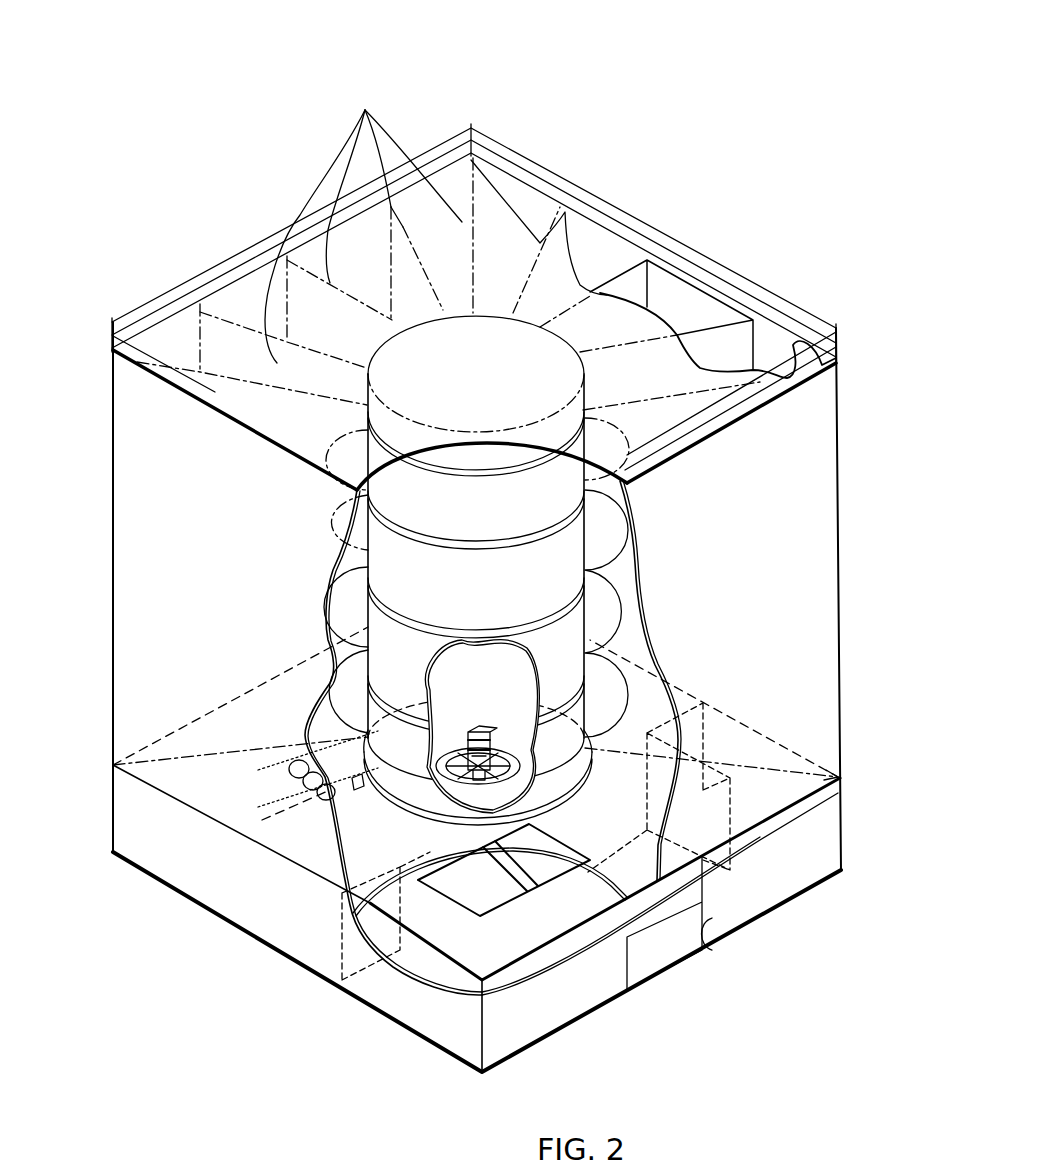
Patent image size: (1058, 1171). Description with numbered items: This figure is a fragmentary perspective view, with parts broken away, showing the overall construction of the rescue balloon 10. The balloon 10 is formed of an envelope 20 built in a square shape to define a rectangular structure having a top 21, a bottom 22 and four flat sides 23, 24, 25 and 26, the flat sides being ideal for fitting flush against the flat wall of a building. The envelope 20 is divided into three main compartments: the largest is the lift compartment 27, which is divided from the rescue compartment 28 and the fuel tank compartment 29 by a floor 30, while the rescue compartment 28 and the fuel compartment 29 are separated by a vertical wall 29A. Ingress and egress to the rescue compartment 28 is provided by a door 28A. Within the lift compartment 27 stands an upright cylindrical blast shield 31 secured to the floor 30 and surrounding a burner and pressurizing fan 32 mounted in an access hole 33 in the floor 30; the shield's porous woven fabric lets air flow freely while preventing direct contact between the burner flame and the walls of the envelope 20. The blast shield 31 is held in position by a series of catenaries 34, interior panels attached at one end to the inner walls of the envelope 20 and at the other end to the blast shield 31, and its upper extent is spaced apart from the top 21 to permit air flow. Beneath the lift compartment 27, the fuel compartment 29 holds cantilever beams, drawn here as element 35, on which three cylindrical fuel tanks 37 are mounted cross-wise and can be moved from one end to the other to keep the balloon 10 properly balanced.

The balloon 10 is at (500, 128).
The envelope 20 is at (826, 472).
The top 21 is at (246, 287).
The bottom 22 is at (797, 900).
The side 23 is at (733, 277).
The side 24 is at (176, 292).
The side 25 is at (130, 562).
The side 26 is at (805, 723).
The lift compartment 27 is at (593, 252).
The rescue compartment 28 is at (648, 942).
The door 28A is at (705, 953).
The fuel tank compartment 29 is at (190, 864).
The vertical wall 29A is at (585, 912).
The floor 30 is at (336, 875).
The blast shield 31 is at (512, 596).
The burner and pressurizing fan 32 is at (512, 748).
The access hole 33 is at (466, 745).
The catenaries 34 is at (363, 223).
The panel 35 is at (502, 878).
The fuel tanks 37 is at (290, 795).